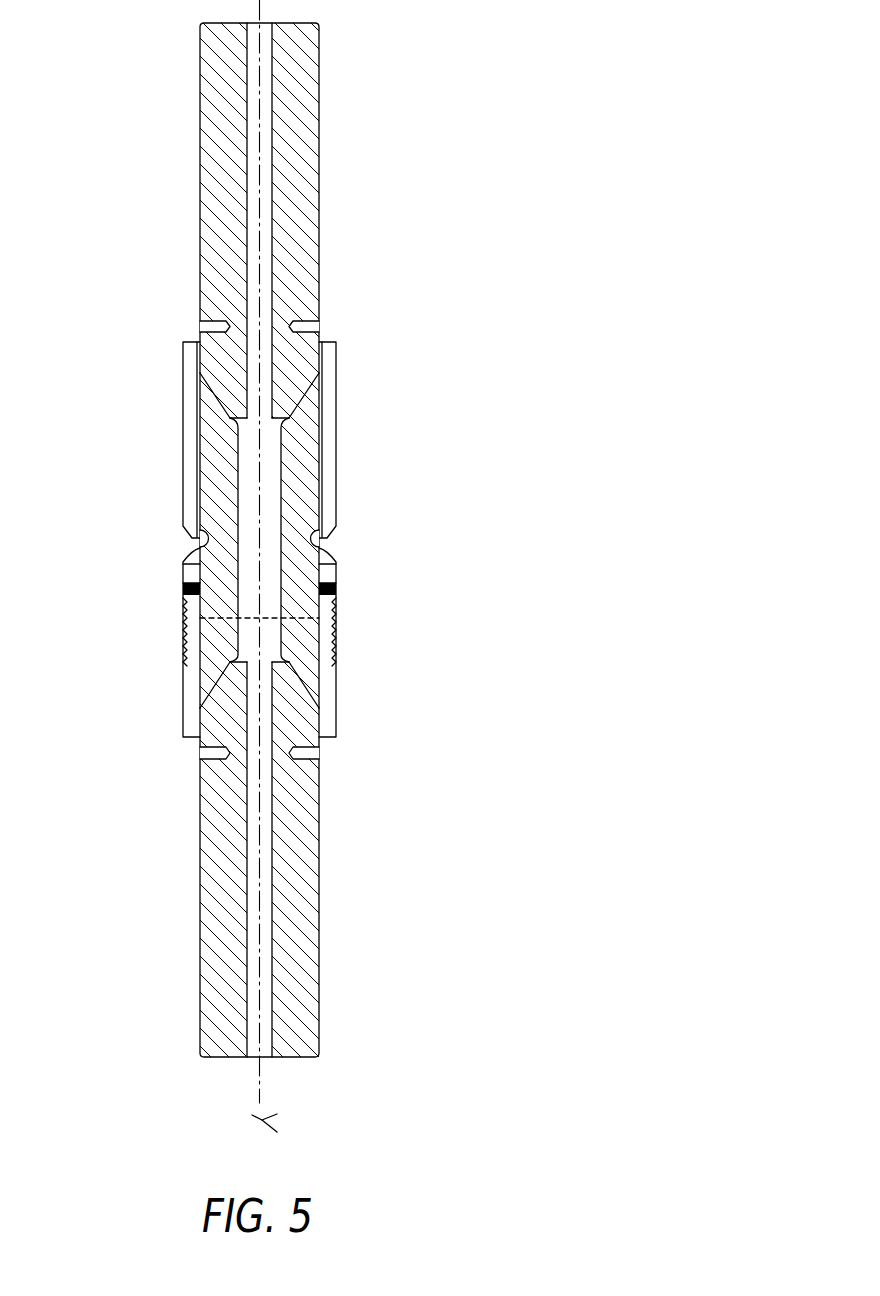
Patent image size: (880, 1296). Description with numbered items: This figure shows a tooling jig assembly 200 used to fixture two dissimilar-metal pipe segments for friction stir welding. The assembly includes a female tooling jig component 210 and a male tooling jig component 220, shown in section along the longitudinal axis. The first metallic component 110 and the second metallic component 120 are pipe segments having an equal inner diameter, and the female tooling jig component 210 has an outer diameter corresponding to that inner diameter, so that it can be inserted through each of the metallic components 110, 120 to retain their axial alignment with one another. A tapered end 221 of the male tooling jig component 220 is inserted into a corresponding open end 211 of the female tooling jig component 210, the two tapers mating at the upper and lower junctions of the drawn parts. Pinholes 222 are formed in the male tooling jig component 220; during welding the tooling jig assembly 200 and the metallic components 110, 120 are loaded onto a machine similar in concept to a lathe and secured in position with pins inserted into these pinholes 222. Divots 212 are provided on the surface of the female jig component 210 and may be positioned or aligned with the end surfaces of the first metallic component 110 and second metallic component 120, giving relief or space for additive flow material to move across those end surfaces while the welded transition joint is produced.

The tooling jig assembly 200 is at (482, 222).
The male tooling jig component 220 is at (305, 227).
The pinholes 222 is at (202, 323).
The tapered end 221 is at (292, 392).
The open end 211 is at (210, 403).
The female tooling jig component 210 is at (210, 465).
The second metallic component 120 is at (332, 420).
The divots 212 is at (322, 545).
The first metallic component 110 is at (327, 640).